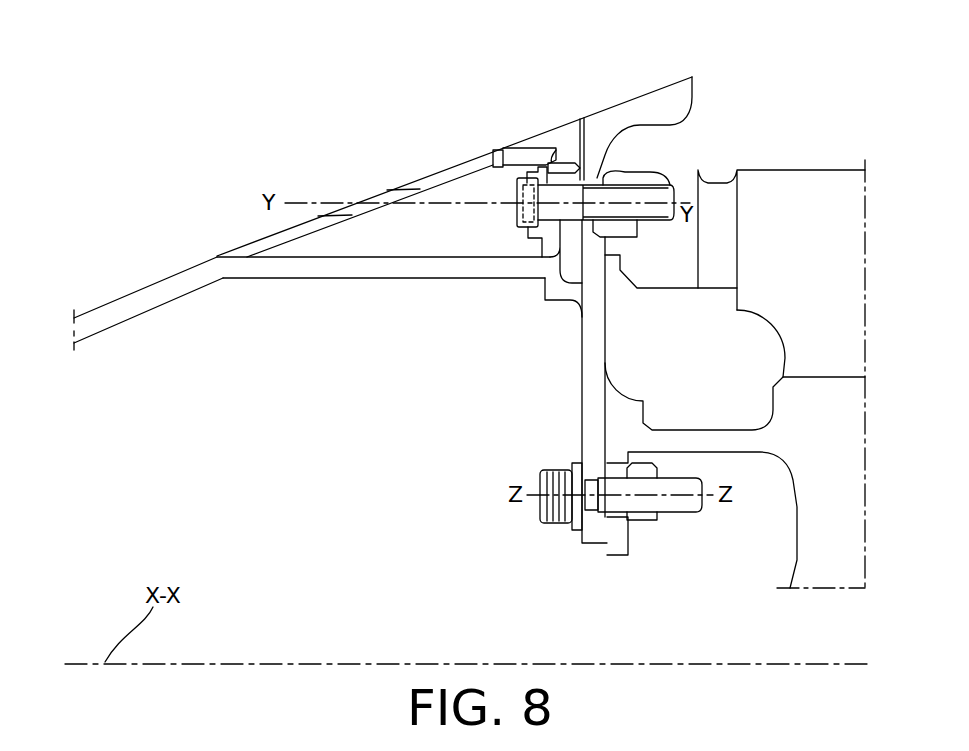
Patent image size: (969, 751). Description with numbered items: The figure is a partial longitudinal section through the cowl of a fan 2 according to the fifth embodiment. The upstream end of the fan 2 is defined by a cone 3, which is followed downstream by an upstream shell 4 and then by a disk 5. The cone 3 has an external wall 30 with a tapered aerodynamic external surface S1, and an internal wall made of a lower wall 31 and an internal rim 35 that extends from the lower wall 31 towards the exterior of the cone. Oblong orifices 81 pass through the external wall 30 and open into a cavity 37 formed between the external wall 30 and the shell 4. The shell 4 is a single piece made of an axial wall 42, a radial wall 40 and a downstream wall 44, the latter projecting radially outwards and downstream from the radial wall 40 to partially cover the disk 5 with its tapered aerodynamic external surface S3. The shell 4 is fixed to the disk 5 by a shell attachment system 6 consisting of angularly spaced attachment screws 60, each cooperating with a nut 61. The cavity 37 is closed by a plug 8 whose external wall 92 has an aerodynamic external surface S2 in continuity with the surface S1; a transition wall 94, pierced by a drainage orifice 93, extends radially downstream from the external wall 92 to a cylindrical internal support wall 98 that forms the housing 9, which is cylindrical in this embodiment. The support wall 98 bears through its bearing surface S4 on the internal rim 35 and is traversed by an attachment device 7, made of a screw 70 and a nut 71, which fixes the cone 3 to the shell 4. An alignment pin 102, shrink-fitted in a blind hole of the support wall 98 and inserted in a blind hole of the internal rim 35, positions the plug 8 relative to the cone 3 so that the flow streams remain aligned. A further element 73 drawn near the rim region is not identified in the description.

The fan 2 is at (162, 167).
The cone 3 is at (312, 276).
The external wall 30 is at (173, 278).
The lower wall 31 is at (342, 270).
The orifice 81 is at (214, 258).
The housing 9 is at (260, 242).
The plug 8 is at (442, 167).
The cavity 37 is at (397, 248).
The external wall 92 is at (448, 168).
The orifice 93 is at (493, 150).
The transition wall 94 is at (517, 146).
The alignment pin 102 is at (555, 157).
The downstream wall 44 is at (694, 88).
The attachment device 7 is at (662, 143).
The screw 70 is at (660, 193).
The nut 71 is at (625, 172).
The bracket 73 is at (520, 240).
The internal support wall 98 is at (537, 243).
The internal rim 35 is at (547, 268).
The upstream shell 4 is at (578, 440).
The radial wall 40 is at (711, 300).
The axial wall 42 is at (558, 292).
The disk 5 is at (822, 505).
The shell attachment system 6 is at (621, 550).
The attachment screw 60 is at (688, 503).
The nut 61 is at (645, 520).
The aerodynamic external surface S1 is at (117, 298).
The aerodynamic external surface S2 is at (403, 180).
The tapered aerodynamic external surface S3 is at (673, 78).
The bearing surface S4 is at (588, 160).